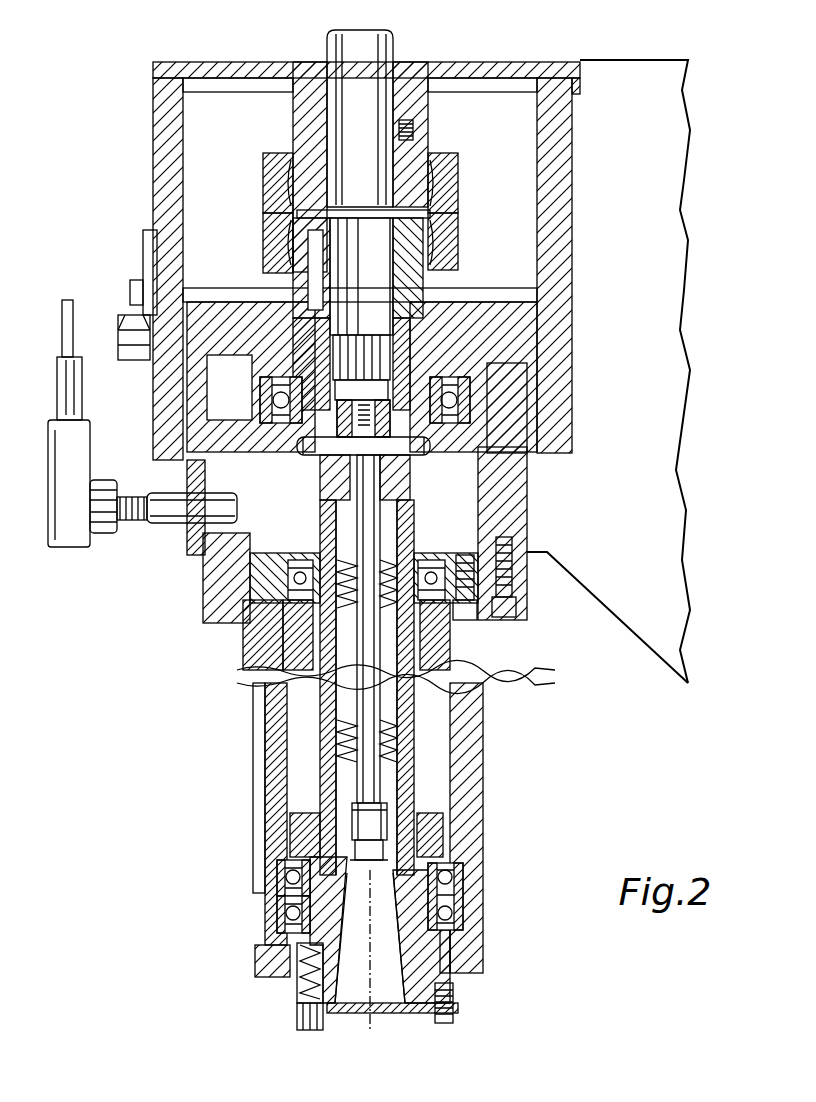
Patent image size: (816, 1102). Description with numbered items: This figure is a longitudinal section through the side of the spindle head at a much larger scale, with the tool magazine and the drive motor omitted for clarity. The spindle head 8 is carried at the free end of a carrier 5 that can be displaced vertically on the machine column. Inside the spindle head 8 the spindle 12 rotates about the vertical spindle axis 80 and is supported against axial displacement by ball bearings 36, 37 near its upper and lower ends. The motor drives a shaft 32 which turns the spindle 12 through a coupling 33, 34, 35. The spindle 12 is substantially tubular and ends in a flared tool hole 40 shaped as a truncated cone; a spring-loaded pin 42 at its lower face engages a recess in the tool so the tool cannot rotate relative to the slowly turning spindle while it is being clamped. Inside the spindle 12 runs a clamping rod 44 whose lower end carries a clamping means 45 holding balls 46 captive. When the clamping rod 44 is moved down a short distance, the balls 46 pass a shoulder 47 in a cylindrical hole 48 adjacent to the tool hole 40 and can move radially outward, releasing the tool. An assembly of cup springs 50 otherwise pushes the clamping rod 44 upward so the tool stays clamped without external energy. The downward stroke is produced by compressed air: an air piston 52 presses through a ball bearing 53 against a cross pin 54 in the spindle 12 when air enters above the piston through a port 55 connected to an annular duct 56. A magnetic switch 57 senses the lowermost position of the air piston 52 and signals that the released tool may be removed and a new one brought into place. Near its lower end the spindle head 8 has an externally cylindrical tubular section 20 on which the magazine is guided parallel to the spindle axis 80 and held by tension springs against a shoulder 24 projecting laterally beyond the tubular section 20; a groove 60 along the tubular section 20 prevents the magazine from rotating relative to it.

The carrier 5 is at (611, 281).
The spindle head 8 is at (163, 592).
The spindle 12 is at (465, 680).
The tubular section 20 is at (463, 747).
The shoulder 24 is at (525, 620).
The shaft 32 is at (400, 55).
The coupling 33 is at (412, 95).
The coupling 34 is at (447, 185).
The coupling 35 is at (432, 235).
The ball bearing 36 is at (473, 627).
The ball bearing 37 is at (463, 903).
The tool hole 40 is at (453, 987).
The spring-loaded pin 42 is at (300, 997).
The clamping rod 44 is at (363, 703).
The clamping means 45 is at (427, 830).
The balls 46 is at (433, 860).
The shoulder 47 is at (290, 877).
The cylindrical hole 48 is at (293, 910).
The cup springs 50 is at (333, 637).
The air piston 52 is at (497, 400).
The ball bearing 53 is at (305, 380).
The cross pin 54 is at (427, 440).
The port 55 is at (135, 315).
The annular duct 56 is at (530, 332).
The magnetic switch 57 is at (157, 520).
The groove 60 is at (257, 793).
The spindle axis 80 is at (480, 955).